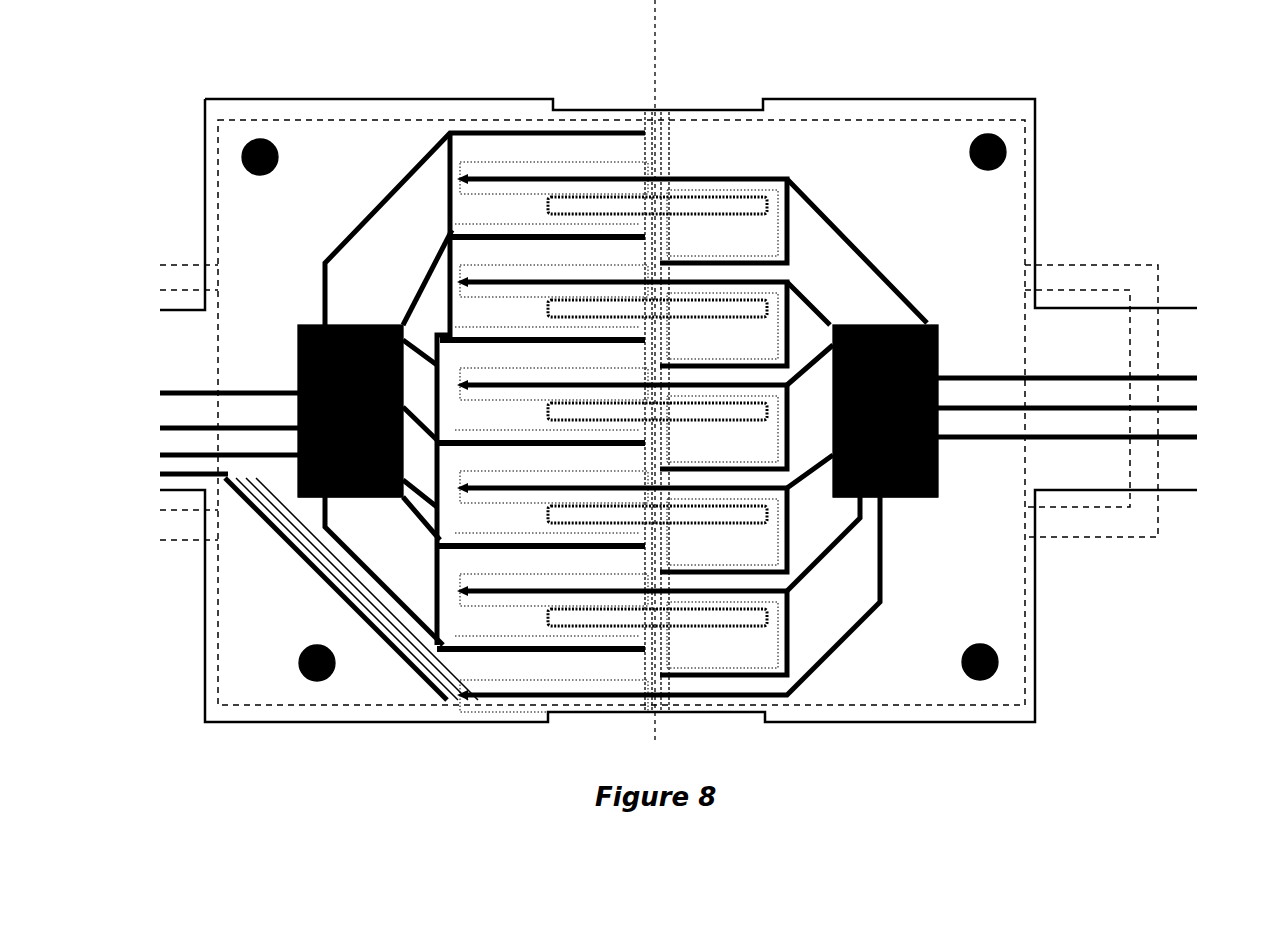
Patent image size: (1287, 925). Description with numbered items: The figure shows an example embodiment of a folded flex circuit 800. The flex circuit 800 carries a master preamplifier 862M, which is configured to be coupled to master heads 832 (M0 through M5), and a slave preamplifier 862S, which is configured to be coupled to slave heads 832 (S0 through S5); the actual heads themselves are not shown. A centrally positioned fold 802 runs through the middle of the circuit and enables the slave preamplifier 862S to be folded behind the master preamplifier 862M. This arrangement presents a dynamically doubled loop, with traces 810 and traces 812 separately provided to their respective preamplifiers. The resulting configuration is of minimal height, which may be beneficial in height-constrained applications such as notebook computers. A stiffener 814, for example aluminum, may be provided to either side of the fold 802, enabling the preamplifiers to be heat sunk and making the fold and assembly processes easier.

The folded flex circuit 800 is at (898, 78).
The fold 802 is at (657, 105).
The traces 810 is at (266, 392).
The traces 812 is at (958, 383).
The stiffener 814 is at (870, 122).
The heads 832 is at (576, 422).
The master preamplifier 862M is at (377, 500).
The slave preamplifier 862S is at (936, 497).